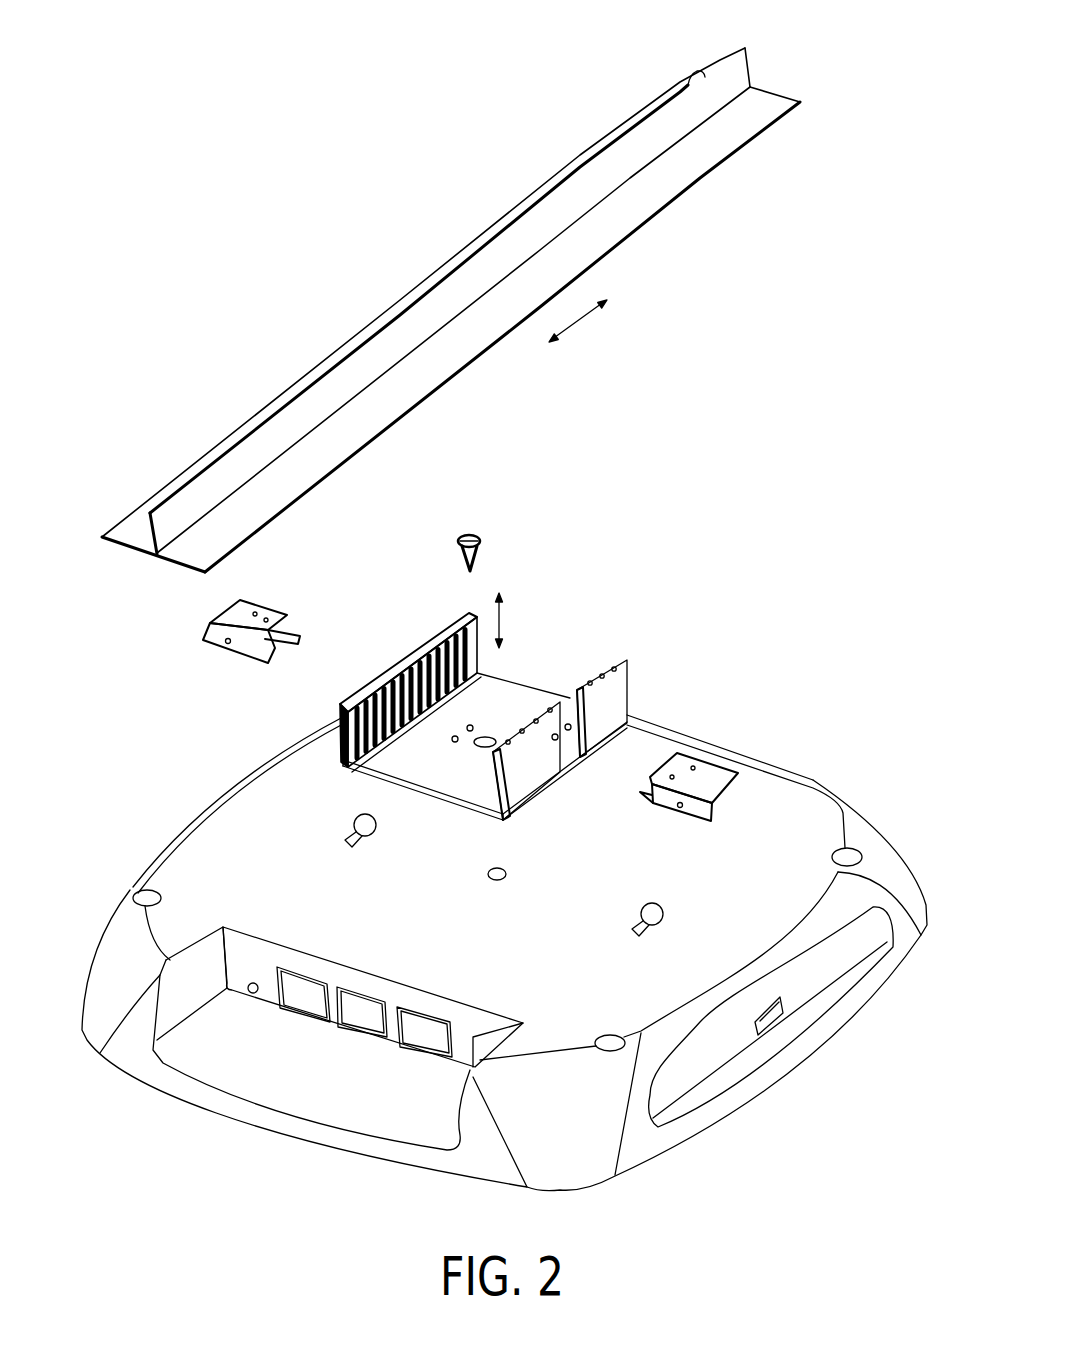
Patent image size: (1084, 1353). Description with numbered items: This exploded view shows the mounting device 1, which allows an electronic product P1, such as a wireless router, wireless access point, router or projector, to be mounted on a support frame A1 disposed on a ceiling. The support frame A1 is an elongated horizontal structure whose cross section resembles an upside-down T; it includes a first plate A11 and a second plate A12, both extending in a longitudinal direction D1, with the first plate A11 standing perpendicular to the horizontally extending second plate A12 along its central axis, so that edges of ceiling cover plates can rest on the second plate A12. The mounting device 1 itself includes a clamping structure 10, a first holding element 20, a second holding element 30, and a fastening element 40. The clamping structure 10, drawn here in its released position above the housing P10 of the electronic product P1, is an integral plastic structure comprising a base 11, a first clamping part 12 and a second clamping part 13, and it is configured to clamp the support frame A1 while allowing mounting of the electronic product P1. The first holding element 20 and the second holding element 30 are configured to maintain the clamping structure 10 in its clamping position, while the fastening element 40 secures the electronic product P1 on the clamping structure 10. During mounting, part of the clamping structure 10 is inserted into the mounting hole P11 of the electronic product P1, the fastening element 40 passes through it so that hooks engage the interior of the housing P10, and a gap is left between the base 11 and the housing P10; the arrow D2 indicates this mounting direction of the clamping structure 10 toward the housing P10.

The mounting device 1 is at (143, 26).
The clamping structure 10 is at (605, 585).
The base 11 is at (517, 708).
The first clamping part 12 is at (430, 633).
The second clamping part 13 is at (610, 718).
The first holding element 20 is at (208, 622).
The second holding element 30 is at (707, 773).
The fastening element 40 is at (482, 533).
The support frame A1 is at (632, 98).
The first plate A11 is at (612, 172).
The second plate A12 is at (722, 145).
The longitudinal direction D1 is at (591, 331).
The second direction D2 is at (526, 620).
The electronic product P1 is at (208, 792).
The housing P10 is at (225, 870).
The mounting hole P11 is at (486, 875).